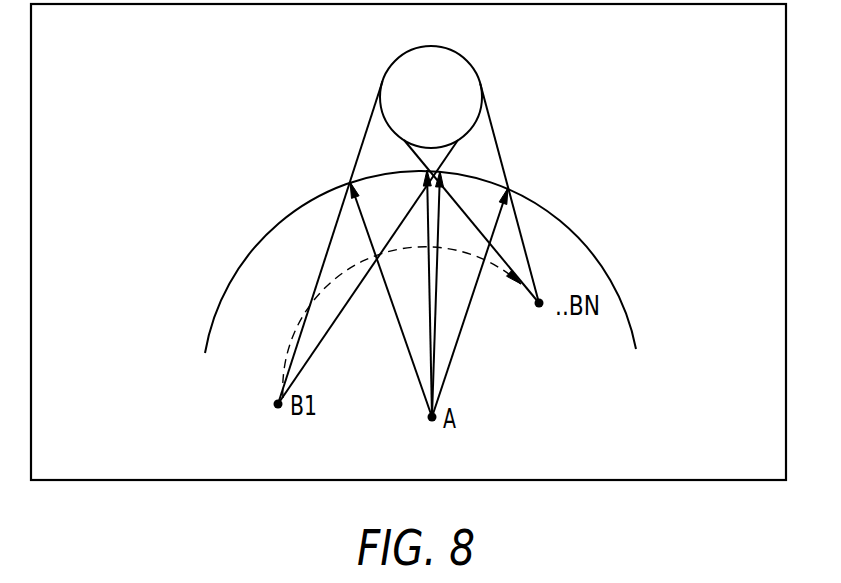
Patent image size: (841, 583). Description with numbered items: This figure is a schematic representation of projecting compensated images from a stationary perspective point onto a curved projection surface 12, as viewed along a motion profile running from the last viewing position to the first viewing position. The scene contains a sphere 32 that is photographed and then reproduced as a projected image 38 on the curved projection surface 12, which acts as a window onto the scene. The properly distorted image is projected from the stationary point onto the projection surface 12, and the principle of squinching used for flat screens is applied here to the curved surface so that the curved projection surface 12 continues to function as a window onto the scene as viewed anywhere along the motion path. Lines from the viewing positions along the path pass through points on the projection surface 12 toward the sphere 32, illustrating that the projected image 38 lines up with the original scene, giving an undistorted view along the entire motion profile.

The projection surface 12 is at (577, 225).
The sphere 32 is at (447, 73).
The projected image 38 is at (355, 167).